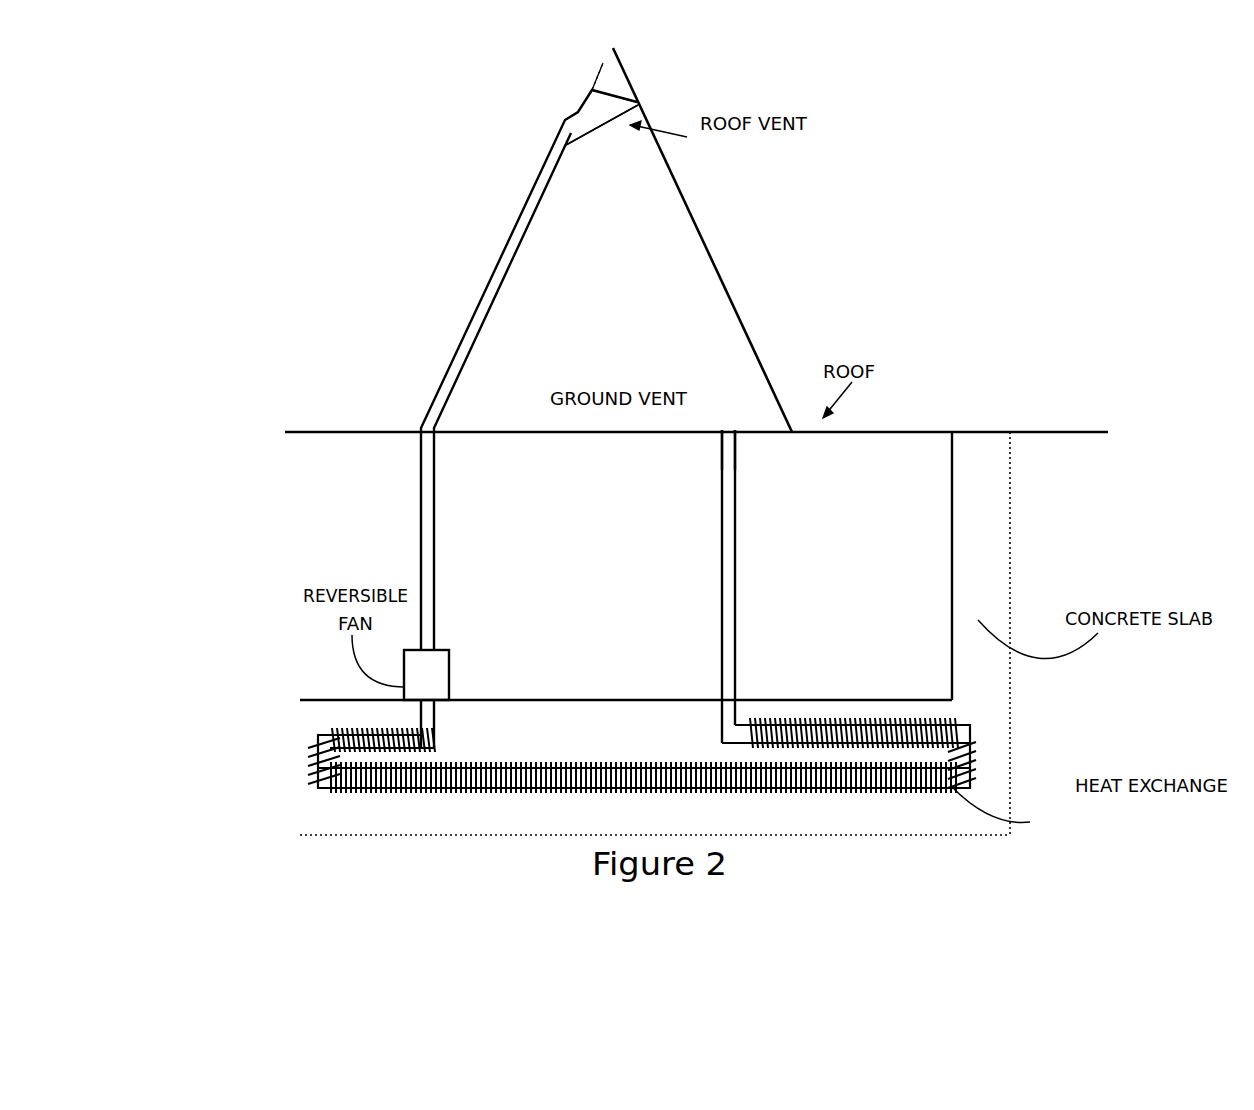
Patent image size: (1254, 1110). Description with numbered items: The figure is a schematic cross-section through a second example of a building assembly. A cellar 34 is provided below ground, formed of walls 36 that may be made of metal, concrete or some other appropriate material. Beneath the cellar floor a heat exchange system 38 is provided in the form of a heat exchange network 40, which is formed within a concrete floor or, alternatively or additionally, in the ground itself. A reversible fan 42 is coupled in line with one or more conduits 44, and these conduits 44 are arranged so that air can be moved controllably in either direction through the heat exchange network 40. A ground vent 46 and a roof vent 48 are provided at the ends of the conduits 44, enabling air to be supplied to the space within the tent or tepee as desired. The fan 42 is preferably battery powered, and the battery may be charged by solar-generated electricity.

The cellar 34 is at (859, 567).
The walls 36 is at (947, 448).
The heat exchange system 38 is at (268, 760).
The heat exchange network 40 is at (913, 788).
The reversible fan 42 is at (450, 658).
The conduits 44 is at (437, 567).
The ground vent 46 is at (725, 428).
The roof vent 48 is at (577, 110).